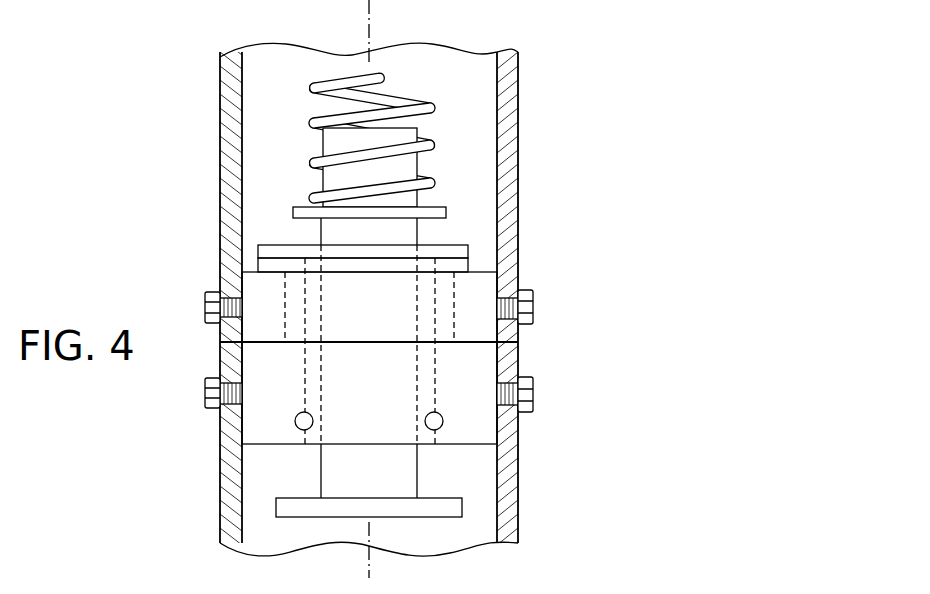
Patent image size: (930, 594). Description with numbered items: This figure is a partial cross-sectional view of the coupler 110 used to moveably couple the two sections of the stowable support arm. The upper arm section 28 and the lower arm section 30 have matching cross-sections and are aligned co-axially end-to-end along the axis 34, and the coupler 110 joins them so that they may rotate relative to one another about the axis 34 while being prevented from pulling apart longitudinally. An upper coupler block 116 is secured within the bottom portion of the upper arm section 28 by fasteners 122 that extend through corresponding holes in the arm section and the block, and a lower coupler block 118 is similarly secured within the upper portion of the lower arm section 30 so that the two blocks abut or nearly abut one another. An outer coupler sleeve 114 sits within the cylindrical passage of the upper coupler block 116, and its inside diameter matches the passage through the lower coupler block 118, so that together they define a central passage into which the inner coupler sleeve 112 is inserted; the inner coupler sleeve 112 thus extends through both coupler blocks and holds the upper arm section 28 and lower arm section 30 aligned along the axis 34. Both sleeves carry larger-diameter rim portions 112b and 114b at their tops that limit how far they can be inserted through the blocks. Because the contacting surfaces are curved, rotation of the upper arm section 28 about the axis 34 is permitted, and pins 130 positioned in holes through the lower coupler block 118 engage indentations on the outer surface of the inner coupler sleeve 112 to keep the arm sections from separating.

The axis 34 is at (370, 32).
The upper arm section 28 is at (518, 121).
The lower arm section 30 is at (518, 537).
The coupler 110 is at (637, 110).
The inner coupler sleeve 112 is at (257, 250).
The rim portion 112b is at (456, 252).
The outer coupler sleeve 114 is at (257, 267).
The rim portion 114b is at (461, 266).
The upper coupler block 116 is at (472, 295).
The lower coupler block 118 is at (463, 374).
The fasteners 122 is at (534, 303).
The pins 130 is at (295, 417).